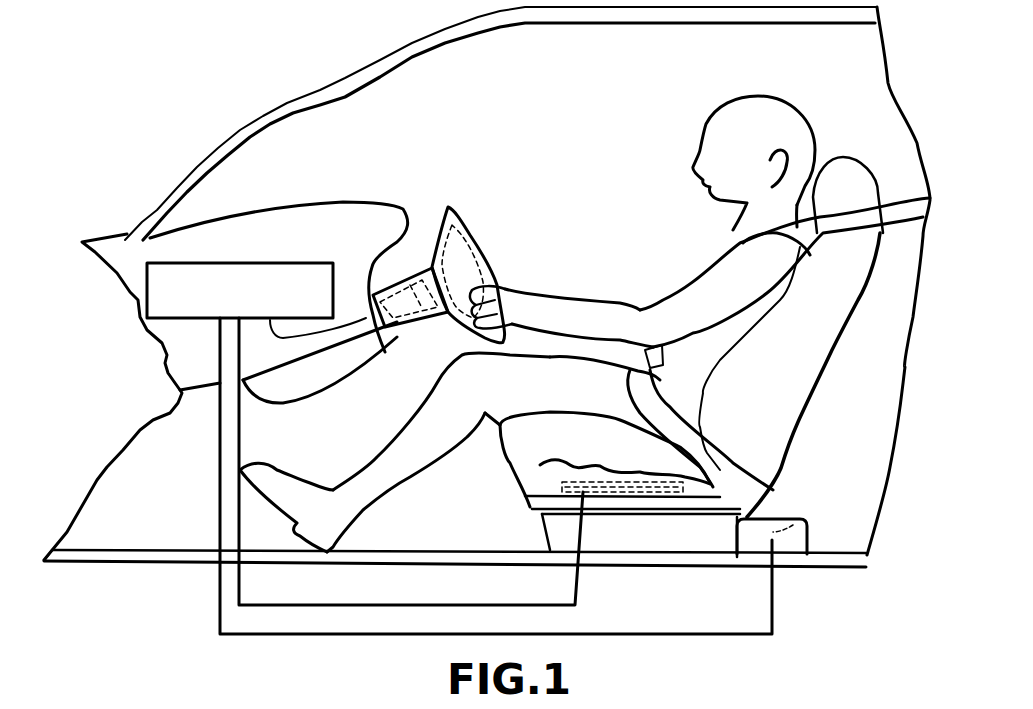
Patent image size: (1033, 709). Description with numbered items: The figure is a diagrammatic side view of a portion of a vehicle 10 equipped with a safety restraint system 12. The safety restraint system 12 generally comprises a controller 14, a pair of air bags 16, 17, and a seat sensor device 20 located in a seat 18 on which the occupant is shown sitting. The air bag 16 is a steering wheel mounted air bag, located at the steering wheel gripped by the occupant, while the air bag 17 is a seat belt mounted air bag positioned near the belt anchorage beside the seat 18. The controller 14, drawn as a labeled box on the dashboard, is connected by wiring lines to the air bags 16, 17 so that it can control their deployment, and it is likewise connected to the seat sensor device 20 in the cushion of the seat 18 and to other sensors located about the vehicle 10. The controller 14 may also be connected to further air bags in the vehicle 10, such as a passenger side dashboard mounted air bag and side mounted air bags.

The vehicle 10 is at (221, 67).
The safety restraint system 12 is at (207, 262).
The controller 14 is at (272, 263).
The air bag 16 is at (440, 245).
The air bag 17 is at (805, 524).
The seat 18 is at (837, 346).
The seat sensor device 20 is at (617, 480).